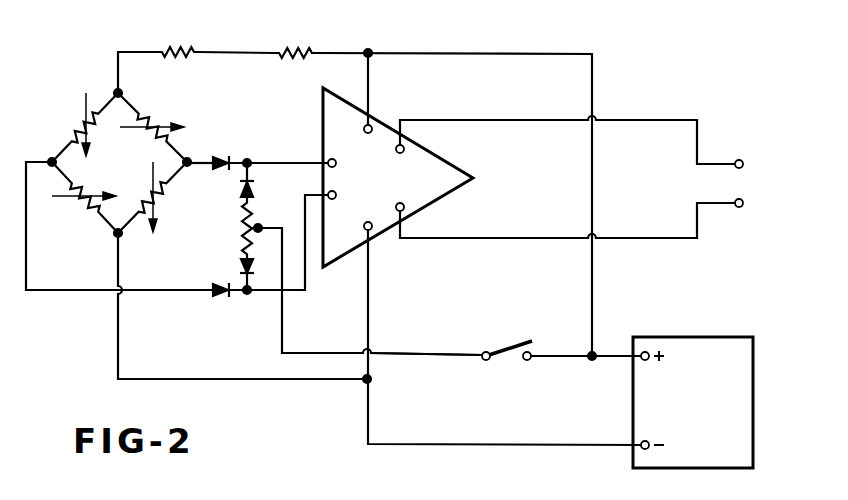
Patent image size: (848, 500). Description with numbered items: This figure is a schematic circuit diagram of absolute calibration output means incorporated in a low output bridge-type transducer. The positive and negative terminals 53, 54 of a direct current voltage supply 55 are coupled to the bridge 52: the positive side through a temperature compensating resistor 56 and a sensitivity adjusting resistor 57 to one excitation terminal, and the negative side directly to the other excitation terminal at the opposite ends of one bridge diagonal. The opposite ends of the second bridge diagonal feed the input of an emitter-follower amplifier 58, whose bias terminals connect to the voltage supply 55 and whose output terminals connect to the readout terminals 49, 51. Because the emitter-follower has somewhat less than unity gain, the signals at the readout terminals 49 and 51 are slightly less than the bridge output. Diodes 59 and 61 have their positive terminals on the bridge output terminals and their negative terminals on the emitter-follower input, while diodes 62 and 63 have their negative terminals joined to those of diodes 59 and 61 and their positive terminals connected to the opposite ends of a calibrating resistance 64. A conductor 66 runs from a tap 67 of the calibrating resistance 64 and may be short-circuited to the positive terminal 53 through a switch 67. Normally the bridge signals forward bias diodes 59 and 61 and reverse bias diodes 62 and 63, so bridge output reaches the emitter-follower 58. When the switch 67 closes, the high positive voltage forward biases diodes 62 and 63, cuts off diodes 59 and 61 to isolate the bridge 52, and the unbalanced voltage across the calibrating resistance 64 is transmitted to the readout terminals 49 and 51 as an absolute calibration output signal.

The readout terminal 49 is at (752, 146).
The readout terminal 51 is at (747, 204).
The bridge 52 is at (80, 111).
The positive terminal 53 is at (648, 350).
The negative terminal 54 is at (642, 450).
The direct current voltage supply 55 is at (694, 458).
The temperature compensating resistor 56 is at (303, 46).
The sensitivity adjusting resistor 57 is at (190, 46).
The emitter-follower amplifier 58 is at (382, 120).
The diode 59 is at (226, 156).
The diode 61 is at (222, 286).
The diode 62 is at (258, 185).
The diode 63 is at (258, 270).
The calibrating resistance 64 is at (230, 211).
The conductor 66 is at (436, 356).
The switch 67 is at (520, 342).